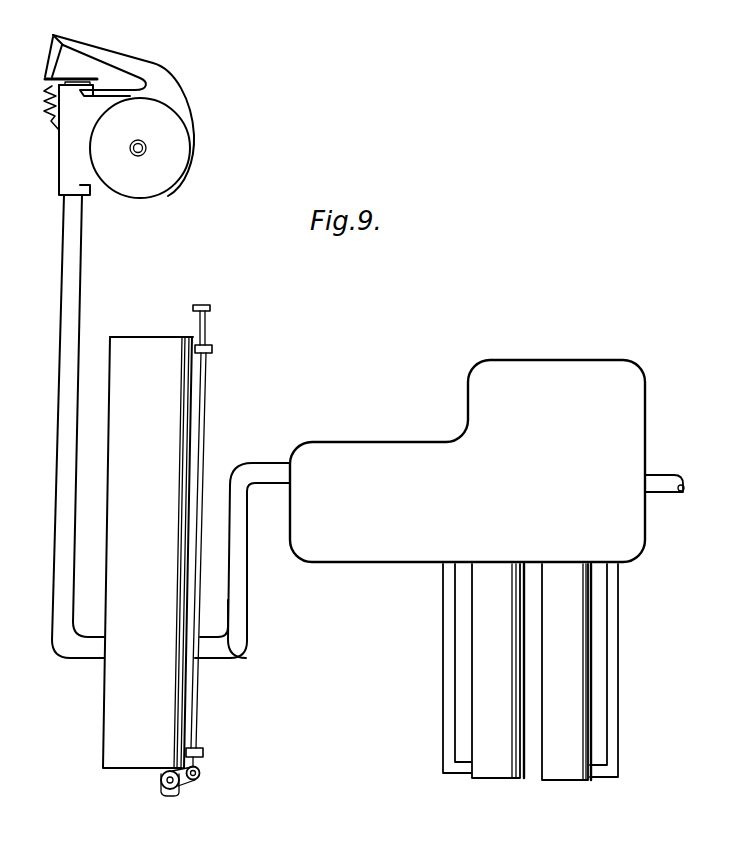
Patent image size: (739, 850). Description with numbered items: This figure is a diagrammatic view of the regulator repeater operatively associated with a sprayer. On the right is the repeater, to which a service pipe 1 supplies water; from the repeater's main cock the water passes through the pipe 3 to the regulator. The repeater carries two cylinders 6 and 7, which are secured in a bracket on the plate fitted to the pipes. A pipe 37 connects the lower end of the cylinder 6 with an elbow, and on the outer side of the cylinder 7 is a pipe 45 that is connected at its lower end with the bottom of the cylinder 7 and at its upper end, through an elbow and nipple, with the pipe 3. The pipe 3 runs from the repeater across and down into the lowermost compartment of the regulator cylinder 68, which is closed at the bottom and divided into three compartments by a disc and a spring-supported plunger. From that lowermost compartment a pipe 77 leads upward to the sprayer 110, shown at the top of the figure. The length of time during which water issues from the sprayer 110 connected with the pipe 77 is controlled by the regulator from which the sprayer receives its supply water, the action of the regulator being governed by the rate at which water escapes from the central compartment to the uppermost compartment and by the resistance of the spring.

The sprayer 110 is at (168, 158).
The pipe 77 is at (66, 343).
The pipe 3 is at (243, 593).
The cylinder 68 is at (170, 420).
The service pipe 1 is at (663, 478).
The pipe 45 is at (450, 658).
The cylinder 7 is at (490, 686).
The cylinder 6 is at (584, 667).
The pipe 37 is at (613, 692).